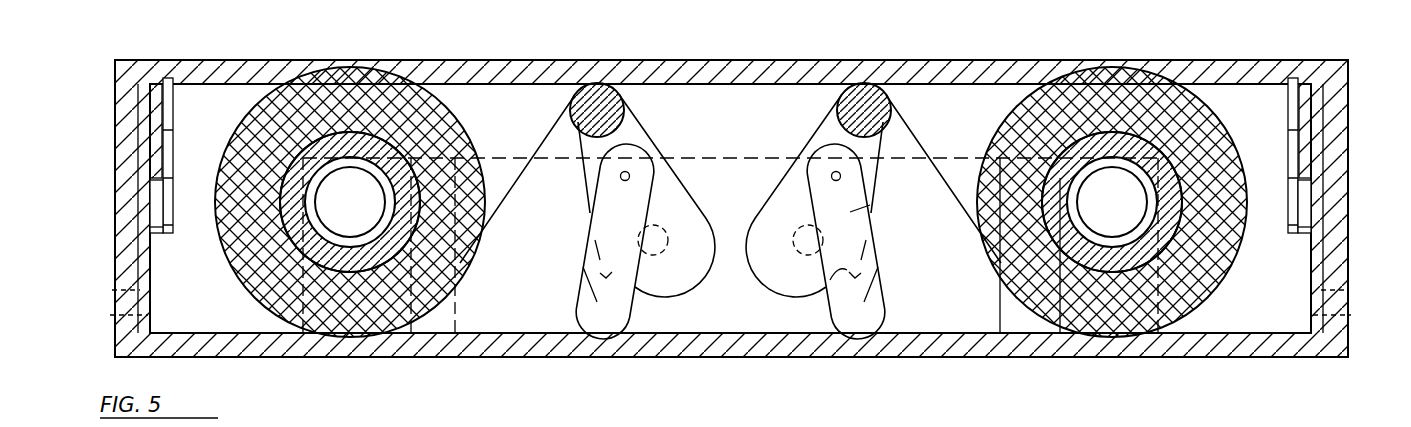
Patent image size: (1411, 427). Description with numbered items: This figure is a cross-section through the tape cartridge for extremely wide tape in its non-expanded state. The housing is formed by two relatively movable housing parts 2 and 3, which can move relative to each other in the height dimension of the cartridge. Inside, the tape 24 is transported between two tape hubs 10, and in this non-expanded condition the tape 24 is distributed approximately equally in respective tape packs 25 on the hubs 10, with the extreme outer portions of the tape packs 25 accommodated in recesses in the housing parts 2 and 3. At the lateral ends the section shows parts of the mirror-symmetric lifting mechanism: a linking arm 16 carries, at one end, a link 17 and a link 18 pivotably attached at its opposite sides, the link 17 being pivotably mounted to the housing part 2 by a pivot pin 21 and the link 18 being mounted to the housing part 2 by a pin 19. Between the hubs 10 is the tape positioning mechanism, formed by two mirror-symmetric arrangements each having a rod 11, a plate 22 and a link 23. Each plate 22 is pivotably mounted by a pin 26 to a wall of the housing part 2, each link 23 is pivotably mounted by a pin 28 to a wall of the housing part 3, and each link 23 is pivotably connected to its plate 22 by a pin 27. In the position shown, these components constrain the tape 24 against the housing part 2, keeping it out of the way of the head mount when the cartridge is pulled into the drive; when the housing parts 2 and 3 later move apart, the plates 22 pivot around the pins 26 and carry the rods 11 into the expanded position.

The housing part 2 is at (948, 63).
The housing part 3 is at (1024, 358).
The tape hub 10 is at (362, 130).
The rod 11 is at (580, 92).
The linking arm 16 is at (152, 202).
The link 17 is at (153, 315).
The link 18 is at (172, 100).
The pin 19 is at (160, 120).
The pivot pin 21 is at (125, 290).
The plate 22 is at (637, 130).
The link 23 is at (603, 222).
The tape 24 is at (548, 135).
The tape pack 25 is at (298, 100).
The pin 26 is at (660, 227).
The pin 27 is at (613, 170).
The pin 28 is at (583, 267).